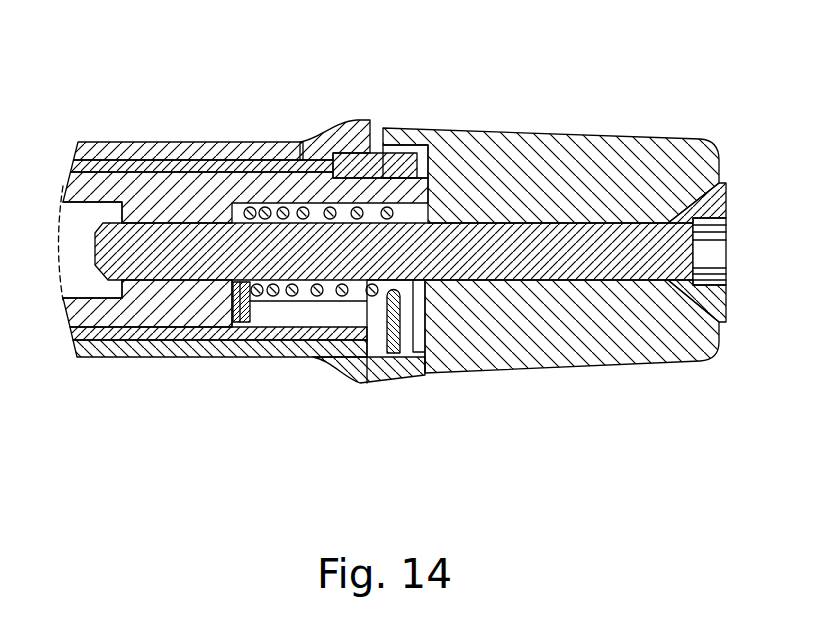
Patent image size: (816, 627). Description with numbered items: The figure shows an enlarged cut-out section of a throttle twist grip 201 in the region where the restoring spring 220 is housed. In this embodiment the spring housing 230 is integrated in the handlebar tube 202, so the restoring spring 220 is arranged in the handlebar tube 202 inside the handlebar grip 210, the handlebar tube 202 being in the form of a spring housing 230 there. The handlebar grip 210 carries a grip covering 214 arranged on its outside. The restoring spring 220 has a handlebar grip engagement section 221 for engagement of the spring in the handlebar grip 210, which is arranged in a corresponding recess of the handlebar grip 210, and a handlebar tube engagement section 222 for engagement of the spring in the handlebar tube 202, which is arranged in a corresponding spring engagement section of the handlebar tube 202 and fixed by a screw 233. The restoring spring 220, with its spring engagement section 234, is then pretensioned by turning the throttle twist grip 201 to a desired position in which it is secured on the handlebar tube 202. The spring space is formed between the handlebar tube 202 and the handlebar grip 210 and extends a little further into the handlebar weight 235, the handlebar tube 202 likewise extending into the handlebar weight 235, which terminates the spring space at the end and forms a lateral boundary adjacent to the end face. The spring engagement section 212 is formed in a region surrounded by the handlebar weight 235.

The throttle twist grip 201 is at (404, 102).
The handlebar tube 202 is at (167, 187).
The handlebar grip 210 is at (188, 330).
The spring engagement section 212 is at (402, 337).
The grip covering 214 is at (93, 348).
The restoring spring 220 is at (330, 217).
The handlebar grip engagement section 221 is at (385, 352).
The handlebar tube engagement section 222 is at (240, 290).
The spring housing 230 is at (275, 308).
The screw 233 is at (517, 233).
The spring engagement section 234 is at (246, 322).
The handlebar weight 235 is at (618, 330).